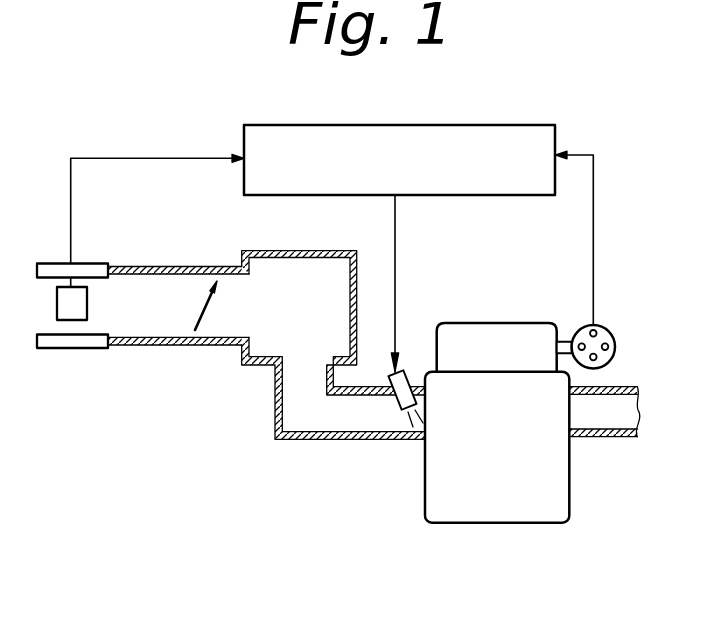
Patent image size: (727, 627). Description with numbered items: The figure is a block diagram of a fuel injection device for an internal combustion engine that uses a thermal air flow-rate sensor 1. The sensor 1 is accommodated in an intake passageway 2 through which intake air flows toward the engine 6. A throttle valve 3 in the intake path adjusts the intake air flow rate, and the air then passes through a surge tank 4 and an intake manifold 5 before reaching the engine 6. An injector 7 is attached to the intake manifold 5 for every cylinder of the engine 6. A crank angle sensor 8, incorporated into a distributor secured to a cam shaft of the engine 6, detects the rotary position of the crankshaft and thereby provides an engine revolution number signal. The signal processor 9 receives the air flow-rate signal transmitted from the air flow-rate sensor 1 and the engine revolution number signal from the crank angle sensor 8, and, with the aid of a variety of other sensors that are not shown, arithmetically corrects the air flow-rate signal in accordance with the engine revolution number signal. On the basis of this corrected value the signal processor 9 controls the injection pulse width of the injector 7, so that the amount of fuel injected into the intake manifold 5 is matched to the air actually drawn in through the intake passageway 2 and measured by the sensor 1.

The thermal air flow-rate sensor 1 is at (67, 349).
The intake passageway 2 is at (135, 298).
The throttle valve 3 is at (205, 330).
The surge tank 4 is at (280, 287).
The intake manifold 5 is at (312, 417).
The engine 6 is at (570, 487).
The injector 7 is at (407, 370).
The crank angle sensor 8 is at (612, 321).
The signal processor 9 is at (390, 123).